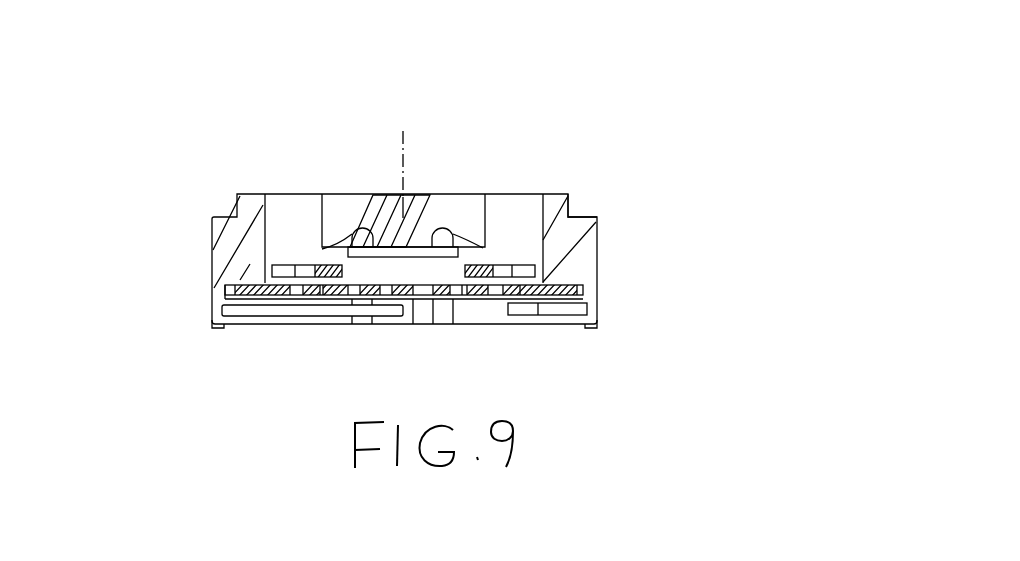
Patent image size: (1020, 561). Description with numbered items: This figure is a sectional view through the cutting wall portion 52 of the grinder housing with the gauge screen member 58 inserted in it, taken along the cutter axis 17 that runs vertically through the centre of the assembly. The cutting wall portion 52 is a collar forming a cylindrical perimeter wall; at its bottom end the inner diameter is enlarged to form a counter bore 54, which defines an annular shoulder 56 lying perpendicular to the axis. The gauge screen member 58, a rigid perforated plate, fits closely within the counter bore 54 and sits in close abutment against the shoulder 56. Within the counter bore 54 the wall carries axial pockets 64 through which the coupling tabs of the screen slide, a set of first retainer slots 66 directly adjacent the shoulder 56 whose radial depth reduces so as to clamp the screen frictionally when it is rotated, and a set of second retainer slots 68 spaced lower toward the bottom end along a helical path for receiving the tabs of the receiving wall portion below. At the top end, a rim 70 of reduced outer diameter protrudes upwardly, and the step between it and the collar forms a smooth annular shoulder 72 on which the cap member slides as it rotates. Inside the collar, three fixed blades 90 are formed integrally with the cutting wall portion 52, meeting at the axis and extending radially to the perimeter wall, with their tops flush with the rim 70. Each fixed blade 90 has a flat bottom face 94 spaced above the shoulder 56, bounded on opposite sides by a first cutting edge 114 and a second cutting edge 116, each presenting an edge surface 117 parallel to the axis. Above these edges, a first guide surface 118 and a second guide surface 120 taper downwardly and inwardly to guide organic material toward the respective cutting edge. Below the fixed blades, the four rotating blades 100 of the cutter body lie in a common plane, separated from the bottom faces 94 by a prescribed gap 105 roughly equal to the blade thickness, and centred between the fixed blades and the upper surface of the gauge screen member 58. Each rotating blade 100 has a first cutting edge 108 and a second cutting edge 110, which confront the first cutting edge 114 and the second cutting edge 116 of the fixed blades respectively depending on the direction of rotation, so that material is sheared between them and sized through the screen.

The cutter axis 17 is at (431, 114).
The cutting wall portion 52 is at (321, 261).
The counter bore 54 is at (564, 349).
The shoulder 56 is at (179, 260).
The gauge screen member 58 is at (465, 291).
The pockets 64 is at (419, 342).
The first retainer slots 66 is at (185, 327).
The second retainer slots 68 is at (311, 352).
The rim 70 is at (594, 218).
The shoulder 72 is at (621, 211).
The fixed blades 90 is at (403, 188).
The bottom face 94 is at (398, 330).
The rotating blades 100 is at (413, 195).
The prescribed gap 105 is at (521, 284).
The first cutting edge 108 is at (451, 168).
The second cutting edge 110 is at (406, 157).
The first cutting edge 114 is at (349, 331).
The second cutting edge 116 is at (481, 328).
The edge surface 117 is at (286, 354).
The first guide surface 118 is at (355, 191).
The second guide surface 120 is at (425, 170).